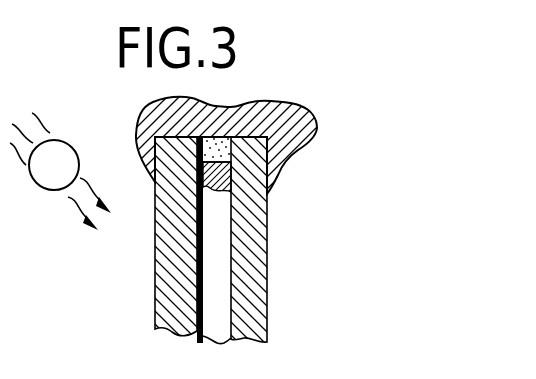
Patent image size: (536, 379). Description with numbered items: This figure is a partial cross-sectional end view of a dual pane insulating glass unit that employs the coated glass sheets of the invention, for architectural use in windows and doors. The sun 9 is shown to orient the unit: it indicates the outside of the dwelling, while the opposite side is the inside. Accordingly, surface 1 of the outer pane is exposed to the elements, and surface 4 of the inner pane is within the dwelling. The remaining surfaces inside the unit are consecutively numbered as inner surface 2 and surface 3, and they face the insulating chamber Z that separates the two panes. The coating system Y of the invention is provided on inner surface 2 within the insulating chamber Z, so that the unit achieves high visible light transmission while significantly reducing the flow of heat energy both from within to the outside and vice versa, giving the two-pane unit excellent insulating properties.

The surface 1 is at (155, 287).
The inner surface 2 is at (197, 337).
The surface 3 is at (229, 316).
The surface 4 is at (267, 312).
The sun 9 is at (47, 178).
The coating system Y is at (219, 344).
The insulating chamber Z is at (225, 272).